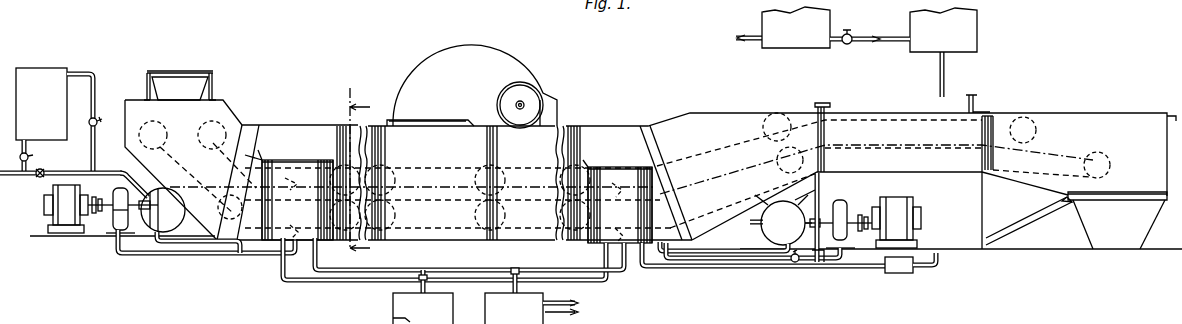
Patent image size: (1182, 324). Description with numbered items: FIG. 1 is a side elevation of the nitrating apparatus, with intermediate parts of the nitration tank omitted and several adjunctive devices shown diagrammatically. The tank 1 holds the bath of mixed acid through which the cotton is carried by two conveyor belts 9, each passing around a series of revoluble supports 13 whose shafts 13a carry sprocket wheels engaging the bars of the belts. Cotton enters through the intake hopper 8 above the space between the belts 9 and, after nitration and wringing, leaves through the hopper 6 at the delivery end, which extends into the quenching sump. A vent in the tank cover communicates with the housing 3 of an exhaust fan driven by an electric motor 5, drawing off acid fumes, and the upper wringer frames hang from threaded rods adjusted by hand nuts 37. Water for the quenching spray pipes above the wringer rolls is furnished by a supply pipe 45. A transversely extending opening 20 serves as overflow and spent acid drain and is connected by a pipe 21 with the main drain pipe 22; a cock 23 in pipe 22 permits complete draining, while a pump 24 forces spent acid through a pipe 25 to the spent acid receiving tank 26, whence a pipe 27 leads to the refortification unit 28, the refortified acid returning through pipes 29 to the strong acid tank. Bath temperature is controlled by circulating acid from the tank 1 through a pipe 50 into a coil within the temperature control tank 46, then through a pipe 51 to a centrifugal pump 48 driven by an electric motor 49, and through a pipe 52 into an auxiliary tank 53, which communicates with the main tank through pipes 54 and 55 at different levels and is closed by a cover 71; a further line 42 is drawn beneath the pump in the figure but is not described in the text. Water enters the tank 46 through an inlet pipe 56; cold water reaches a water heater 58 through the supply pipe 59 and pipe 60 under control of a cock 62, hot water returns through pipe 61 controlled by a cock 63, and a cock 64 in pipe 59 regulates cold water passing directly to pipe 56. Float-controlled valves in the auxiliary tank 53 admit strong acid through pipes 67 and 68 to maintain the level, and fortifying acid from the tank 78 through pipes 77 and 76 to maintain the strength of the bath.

The tank 1 is at (289, 133).
The exhaust fan housing 3 is at (428, 66).
The electric motor 5 is at (503, 94).
The hopper 6 is at (1085, 233).
The hopper 8 is at (183, 82).
The conveyor belts 9 is at (186, 140).
The revoluble supports 13 is at (153, 125).
The shaft 13a is at (797, 315).
The transversely extending opening 20 is at (815, 205).
The pipe 21 is at (826, 254).
The pipe 22 is at (745, 262).
The cock 23 is at (797, 264).
The pump 24 is at (904, 272).
The pipe 25 is at (941, 262).
The spent acid receiving tank 26 is at (978, 42).
The pipe 27 is at (878, 35).
The acid refortification unit 28 is at (796, 24).
The pipes 29 is at (735, 26).
The hand nuts 37 is at (828, 106).
The pipe 42 is at (140, 256).
The supply pipe 45 is at (967, 105).
The temperature control tank 46 is at (176, 220).
The centrifugal pump 48 is at (118, 210).
The electric motor 49 is at (50, 210).
The pipe 50 is at (210, 247).
The pipe 51 is at (823, 196).
The pipe 52 is at (772, 270).
The auxiliary tanks 53 is at (306, 165).
The pipe 54 is at (459, 225).
The pipe 55 is at (456, 182).
The inlet pipe 56 is at (132, 172).
The water heater 58 is at (41, 104).
The cold water supply pipe 59 is at (8, 177).
The pipe 60 is at (28, 150).
The hot water pipe 61 is at (95, 92).
The cock 62 is at (17, 153).
The cock 63 is at (96, 125).
The cock 64 is at (37, 177).
The pipe 67 is at (388, 270).
The pipe 68 is at (560, 295).
The cover 71 is at (287, 160).
The pipe 76 is at (304, 283).
The pipe 77 is at (422, 292).
The tank 78 is at (392, 315).